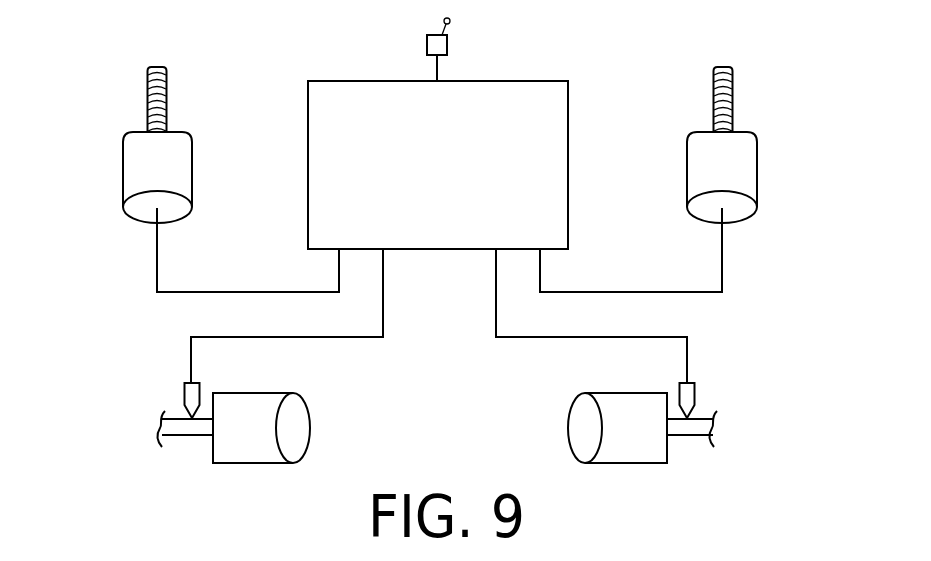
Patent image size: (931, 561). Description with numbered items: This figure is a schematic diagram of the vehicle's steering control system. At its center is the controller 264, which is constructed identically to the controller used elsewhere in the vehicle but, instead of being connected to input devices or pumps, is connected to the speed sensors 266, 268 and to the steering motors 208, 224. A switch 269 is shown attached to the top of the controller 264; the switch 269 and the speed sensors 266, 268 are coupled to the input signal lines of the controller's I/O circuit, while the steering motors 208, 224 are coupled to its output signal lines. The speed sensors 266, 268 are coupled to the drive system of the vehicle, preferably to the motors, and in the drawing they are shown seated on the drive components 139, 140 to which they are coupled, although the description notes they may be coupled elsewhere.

The controller 264 is at (486, 81).
The switch 269 is at (447, 42).
The steering motor 208 is at (123, 180).
The steering motor 224 is at (757, 172).
The speed sensor 266 is at (200, 397).
The speed sensor 268 is at (695, 398).
The left air chamber 139 is at (252, 463).
The right air chamber 140 is at (610, 463).